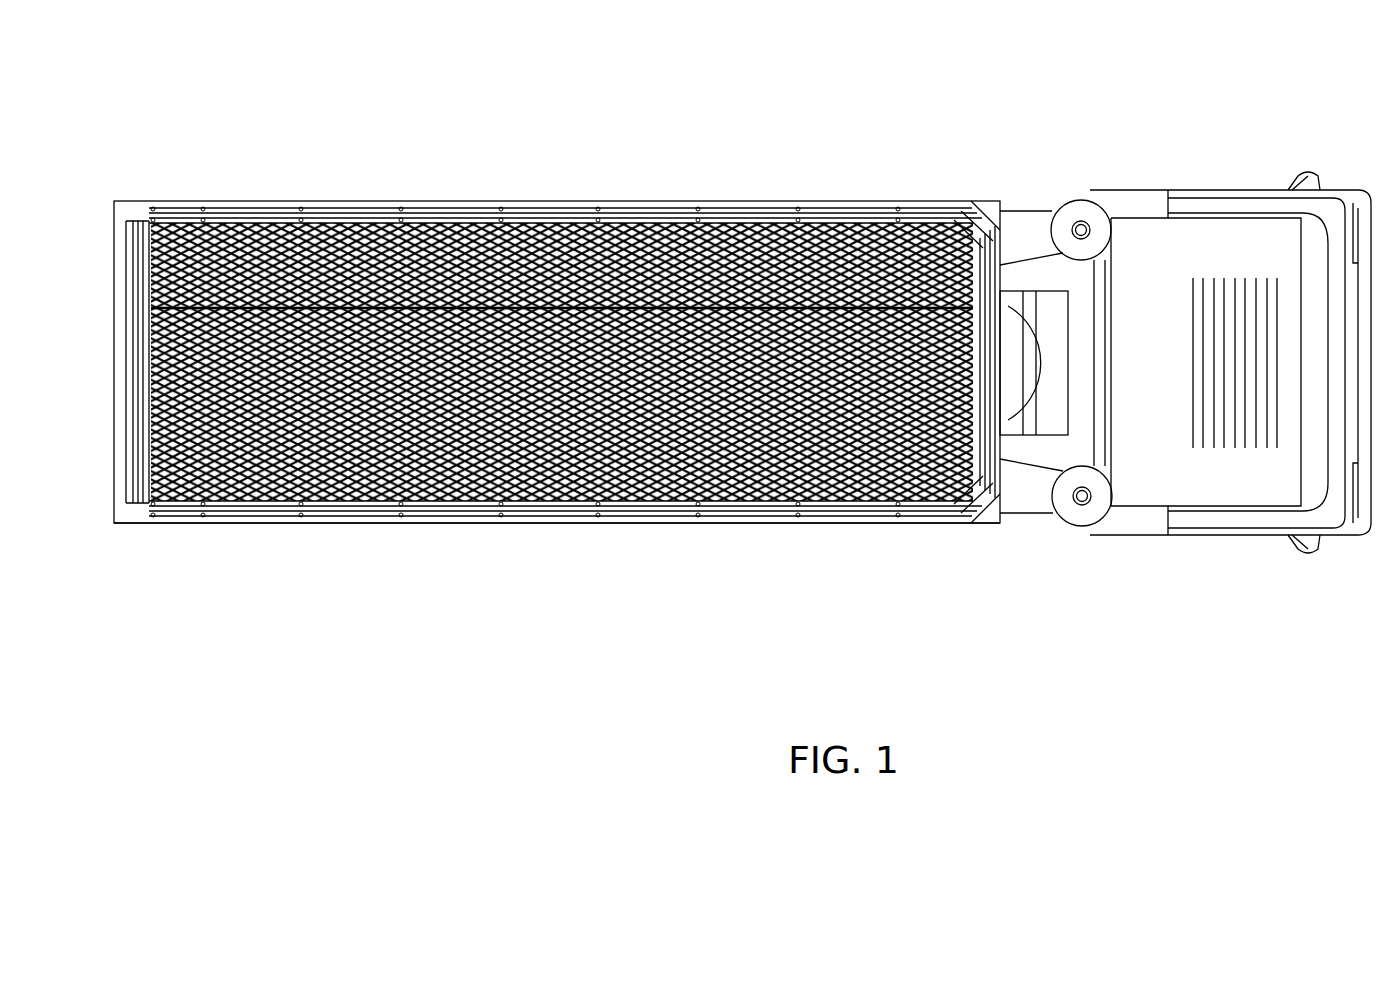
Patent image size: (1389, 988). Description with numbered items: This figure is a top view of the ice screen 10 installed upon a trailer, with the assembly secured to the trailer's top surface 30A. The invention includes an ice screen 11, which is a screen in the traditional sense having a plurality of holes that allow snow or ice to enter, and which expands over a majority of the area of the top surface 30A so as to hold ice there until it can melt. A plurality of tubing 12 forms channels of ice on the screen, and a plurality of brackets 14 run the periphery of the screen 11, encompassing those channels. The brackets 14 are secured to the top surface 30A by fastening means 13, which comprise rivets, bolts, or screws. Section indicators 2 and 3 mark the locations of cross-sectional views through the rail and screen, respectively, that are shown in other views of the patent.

The ice screen 10 is at (140, 148).
The ice screen 11 is at (442, 215).
The tubing 12 is at (618, 292).
The fastening means 13 is at (393, 195).
The brackets 14 is at (225, 200).
The top surface 30A is at (528, 515).
The section line 2- 2 is at (357, 172).
The section line 3- 3 is at (722, 537).